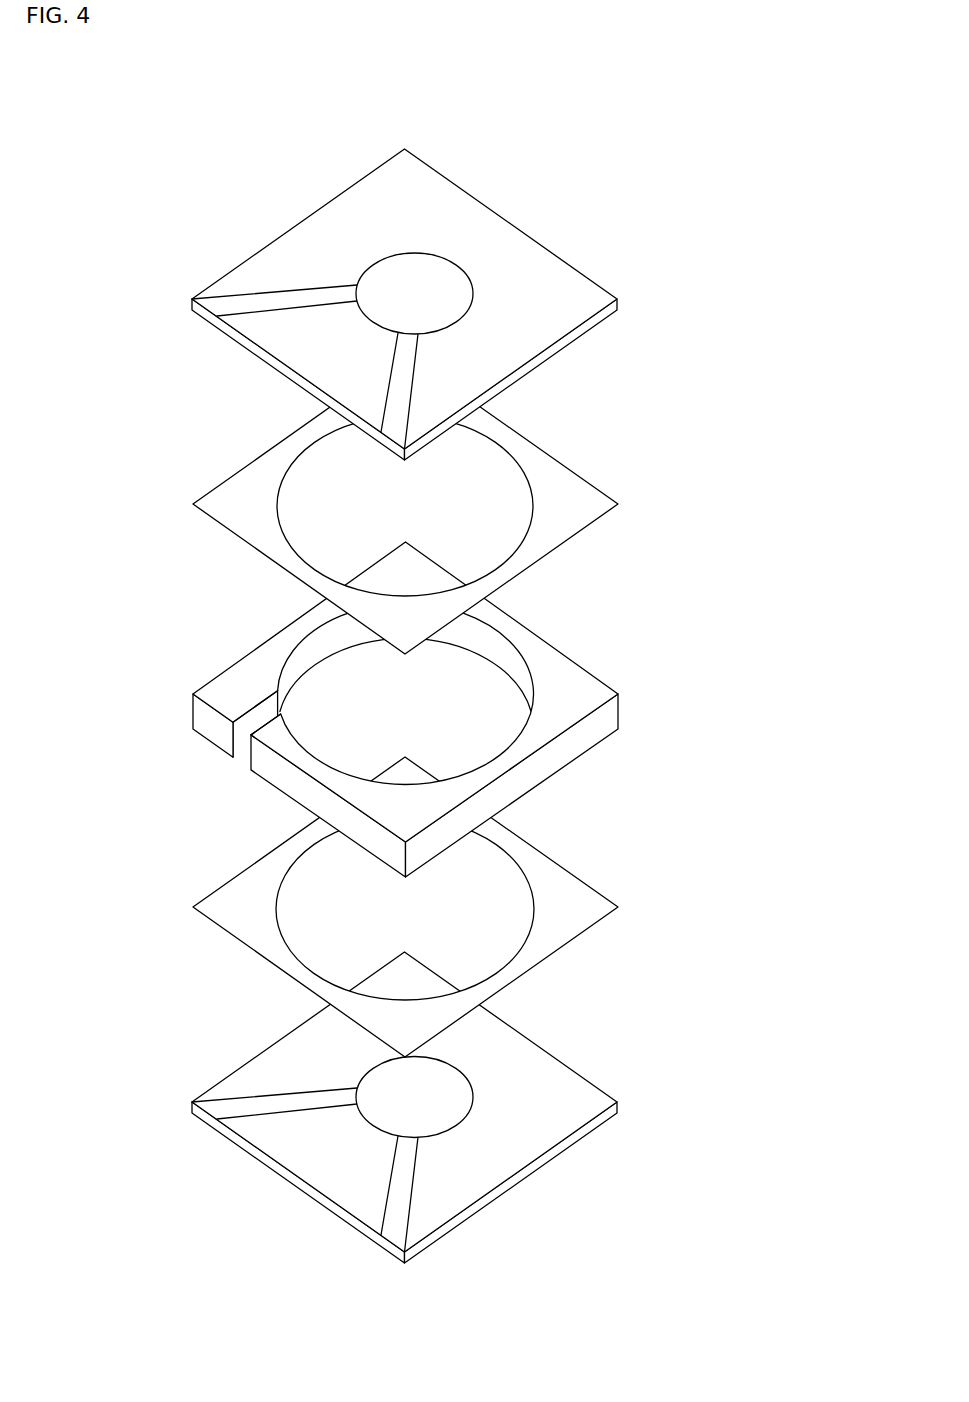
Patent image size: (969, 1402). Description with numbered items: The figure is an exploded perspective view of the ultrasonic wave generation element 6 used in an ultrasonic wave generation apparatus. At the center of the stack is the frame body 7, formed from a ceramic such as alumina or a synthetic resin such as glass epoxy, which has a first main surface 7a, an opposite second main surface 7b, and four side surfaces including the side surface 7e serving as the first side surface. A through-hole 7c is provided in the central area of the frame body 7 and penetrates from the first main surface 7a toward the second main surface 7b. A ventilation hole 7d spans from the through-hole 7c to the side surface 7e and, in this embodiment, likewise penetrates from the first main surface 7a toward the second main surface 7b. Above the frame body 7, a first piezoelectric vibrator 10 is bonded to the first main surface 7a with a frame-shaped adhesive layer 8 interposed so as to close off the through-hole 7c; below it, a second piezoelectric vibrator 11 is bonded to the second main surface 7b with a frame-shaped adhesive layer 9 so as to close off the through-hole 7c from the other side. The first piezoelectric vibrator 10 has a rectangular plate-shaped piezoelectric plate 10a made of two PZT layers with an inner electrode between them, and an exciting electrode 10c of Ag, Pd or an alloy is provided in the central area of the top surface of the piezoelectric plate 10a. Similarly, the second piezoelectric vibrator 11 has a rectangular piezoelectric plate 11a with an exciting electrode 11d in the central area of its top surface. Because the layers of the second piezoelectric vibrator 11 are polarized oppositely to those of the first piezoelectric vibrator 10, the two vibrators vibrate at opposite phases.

The ultrasonic wave generation element 6 is at (251, 212).
The frame body 7 is at (575, 660).
The first main surface 7a is at (598, 678).
The second main surface 7b is at (578, 757).
The through-hole 7c is at (502, 632).
The ventilation hole 7d is at (247, 750).
The side surface 7e is at (207, 723).
The frame-shaped adhesive layer 8 is at (585, 478).
The frame-shaped adhesive layer 9 is at (585, 883).
The first piezoelectric vibrator 10 is at (607, 285).
The piezoelectric plate 10a is at (540, 242).
The exciting electrode 10c is at (425, 252).
The second piezoelectric vibrator 11 is at (593, 1082).
The piezoelectric plate 11a is at (527, 1053).
The exciting electrode 11d is at (468, 1115).